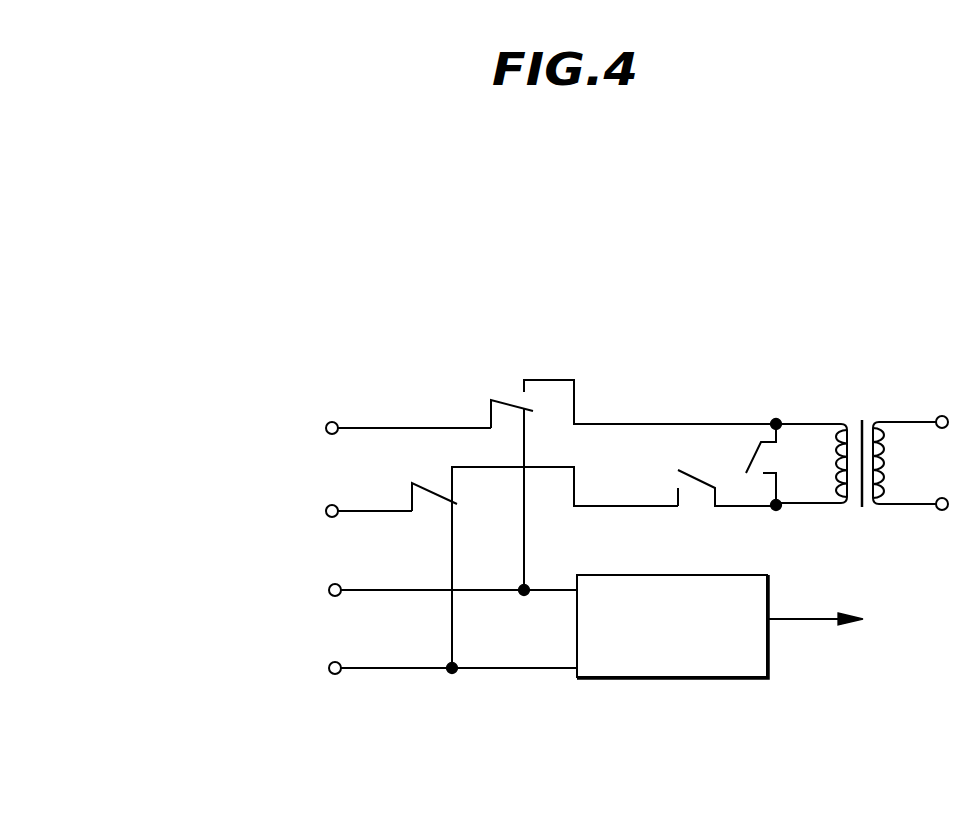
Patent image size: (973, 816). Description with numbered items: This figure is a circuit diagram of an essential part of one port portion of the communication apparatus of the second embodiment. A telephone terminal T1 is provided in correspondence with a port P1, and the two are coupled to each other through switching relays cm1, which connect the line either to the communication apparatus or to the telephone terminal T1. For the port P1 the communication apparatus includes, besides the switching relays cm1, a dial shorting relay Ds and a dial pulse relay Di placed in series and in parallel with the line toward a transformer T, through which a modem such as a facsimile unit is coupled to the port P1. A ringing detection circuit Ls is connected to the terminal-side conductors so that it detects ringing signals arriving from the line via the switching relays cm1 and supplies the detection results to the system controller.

The port P1 is at (325, 469).
The telephone terminal T1 is at (312, 629).
The switching relays cm1 is at (594, 509).
The dial pulse relay Di is at (727, 503).
The dial shorting relay Ds is at (773, 465).
The transformer T is at (862, 447).
The ringing detection circuit Ls is at (648, 677).